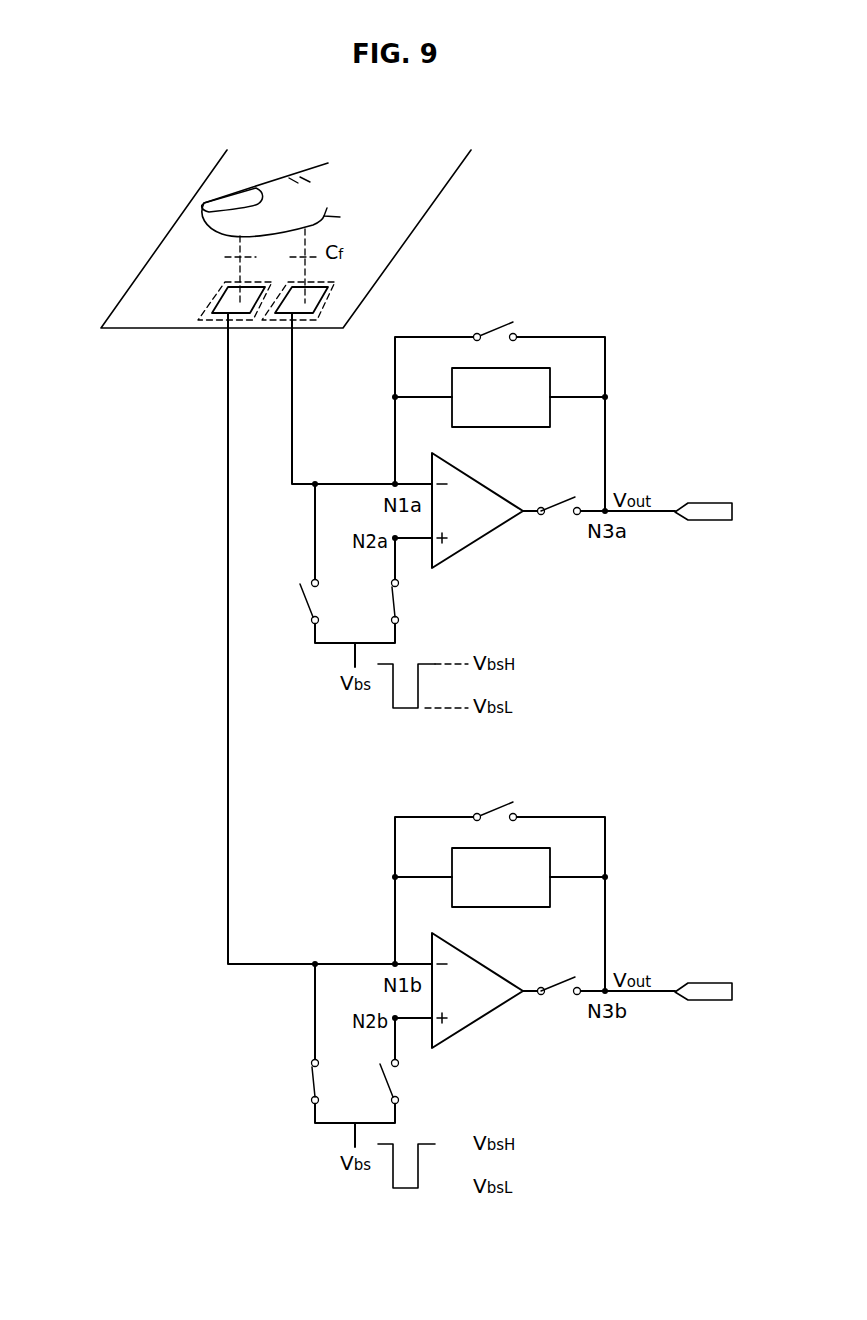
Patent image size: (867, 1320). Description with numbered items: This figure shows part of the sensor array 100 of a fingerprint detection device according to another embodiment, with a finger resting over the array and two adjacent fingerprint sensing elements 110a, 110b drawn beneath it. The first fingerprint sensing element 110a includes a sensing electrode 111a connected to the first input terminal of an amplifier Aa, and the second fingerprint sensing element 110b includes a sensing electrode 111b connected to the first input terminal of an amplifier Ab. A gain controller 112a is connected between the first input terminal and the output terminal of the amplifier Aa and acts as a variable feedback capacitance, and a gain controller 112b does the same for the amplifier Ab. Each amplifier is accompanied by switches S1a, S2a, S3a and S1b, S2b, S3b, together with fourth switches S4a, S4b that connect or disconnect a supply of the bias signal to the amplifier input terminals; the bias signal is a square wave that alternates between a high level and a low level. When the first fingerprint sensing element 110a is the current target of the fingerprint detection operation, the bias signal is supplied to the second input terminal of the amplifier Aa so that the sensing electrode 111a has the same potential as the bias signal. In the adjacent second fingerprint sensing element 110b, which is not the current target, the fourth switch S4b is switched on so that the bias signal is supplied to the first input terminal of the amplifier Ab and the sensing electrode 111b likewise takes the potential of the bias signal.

The sensor array 100 is at (213, 163).
The first fingerprint sensing element 110a is at (343, 280).
The second fingerprint sensing element 110b is at (217, 291).
The sensing electrode 111a is at (331, 297).
The sensing electrode 111b is at (222, 288).
The gain controller 112a is at (550, 370).
The gain controller 112b is at (550, 850).
The first switch of first sensing circuit S1a is at (497, 316).
The second switch of first sensing circuit S2a is at (564, 494).
The third switch of first sensing circuit S3a is at (292, 602).
The fourth switch S4a is at (416, 602).
The first switch of second sensing circuit S1b is at (497, 796).
The second switch of second sensing circuit S2b is at (564, 974).
The third switch of second sensing circuit S3b is at (292, 1082).
The fourth switch S4b is at (410, 1082).
The amplifier Aa is at (477, 510).
The amplifier Ab is at (477, 990).